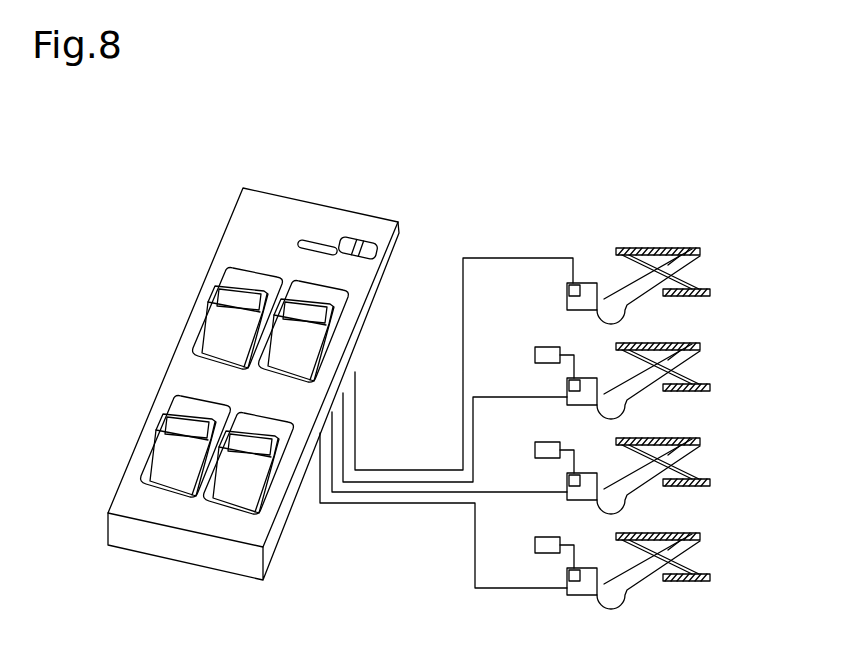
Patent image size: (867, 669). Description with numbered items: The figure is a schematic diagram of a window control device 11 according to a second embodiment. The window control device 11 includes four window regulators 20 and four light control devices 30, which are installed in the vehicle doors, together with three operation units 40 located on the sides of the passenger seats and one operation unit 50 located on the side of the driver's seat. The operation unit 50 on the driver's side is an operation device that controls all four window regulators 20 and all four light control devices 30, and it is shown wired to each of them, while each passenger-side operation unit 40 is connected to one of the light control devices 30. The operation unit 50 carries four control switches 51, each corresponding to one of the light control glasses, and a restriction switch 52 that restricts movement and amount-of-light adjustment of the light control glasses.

The window control device 11 is at (677, 196).
The window regulator 20 is at (688, 418).
The light control device 30 is at (567, 287).
The operation unit 40 is at (547, 347).
The operation unit 50 is at (409, 163).
The control switch 51 is at (223, 337).
The restriction switch 52 is at (352, 235).